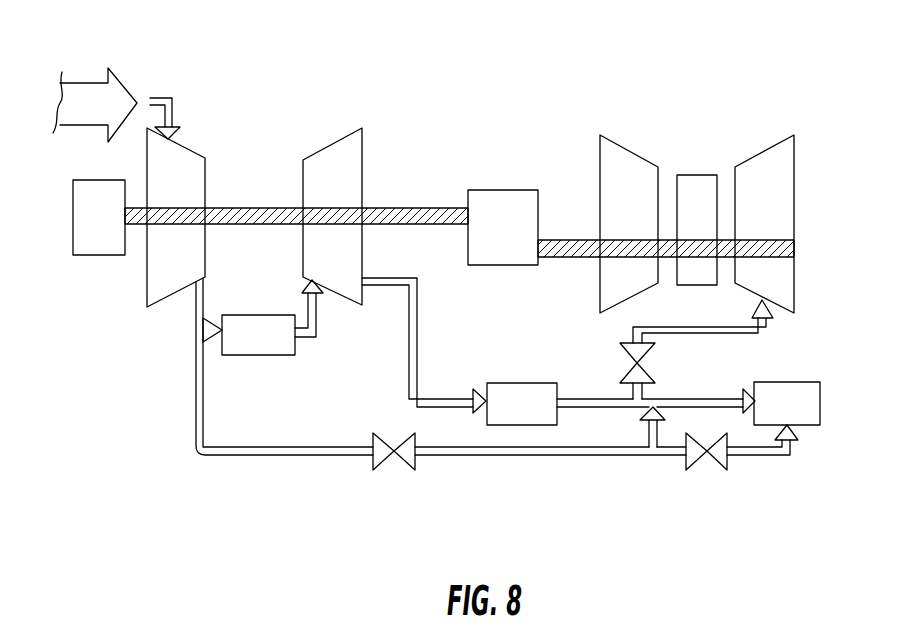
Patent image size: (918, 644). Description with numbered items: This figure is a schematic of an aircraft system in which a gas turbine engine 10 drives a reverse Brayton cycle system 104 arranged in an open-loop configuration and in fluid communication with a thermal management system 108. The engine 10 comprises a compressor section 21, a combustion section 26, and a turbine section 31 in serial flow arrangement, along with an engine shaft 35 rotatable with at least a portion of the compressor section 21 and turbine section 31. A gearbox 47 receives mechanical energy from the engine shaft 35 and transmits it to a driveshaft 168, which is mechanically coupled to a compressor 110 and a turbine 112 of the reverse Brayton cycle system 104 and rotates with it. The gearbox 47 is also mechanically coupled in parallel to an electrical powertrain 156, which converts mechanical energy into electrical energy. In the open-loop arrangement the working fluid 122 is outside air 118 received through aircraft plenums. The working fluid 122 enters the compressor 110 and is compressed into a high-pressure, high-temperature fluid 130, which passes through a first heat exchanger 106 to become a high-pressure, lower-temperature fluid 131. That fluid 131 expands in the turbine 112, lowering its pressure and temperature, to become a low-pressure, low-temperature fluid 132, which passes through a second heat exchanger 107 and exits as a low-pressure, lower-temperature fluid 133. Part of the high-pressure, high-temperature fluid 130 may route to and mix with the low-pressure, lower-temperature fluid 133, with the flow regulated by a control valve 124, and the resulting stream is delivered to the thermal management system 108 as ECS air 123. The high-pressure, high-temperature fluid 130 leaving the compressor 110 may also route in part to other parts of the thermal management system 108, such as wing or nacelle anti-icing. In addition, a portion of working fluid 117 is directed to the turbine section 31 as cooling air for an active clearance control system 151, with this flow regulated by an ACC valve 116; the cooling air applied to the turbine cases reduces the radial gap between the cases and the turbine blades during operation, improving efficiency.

The gas turbine engine 10 is at (687, 137).
The compressor section 21 is at (617, 218).
The combustion section 26 is at (685, 231).
The turbine section 31 is at (752, 218).
The engine shaft 35 is at (570, 240).
The gearbox 47 is at (491, 241).
The reverse Brayton cycle system 104 is at (278, 135).
The first heat exchanger 106 is at (241, 350).
The second heat exchanger 107 is at (505, 418).
The thermal management system 108 is at (770, 417).
The compressor 110 is at (159, 258).
The turbine 112 is at (315, 258).
The ACC valve 116 is at (618, 345).
The portion of working fluid 117 is at (642, 391).
The outside air 118 is at (88, 83).
The working fluid 122 is at (75, 120).
The ECS air 123 is at (695, 398).
The control valve 124 is at (373, 433).
The high-pressure, high-temperature fluid 130 is at (196, 312).
The high-pressure, lower-temperature fluid 131 is at (316, 322).
The low-pressure, low-temperature fluid 132 is at (380, 278).
The low-pressure, lower-temperature fluid 133 is at (578, 398).
The active clearance control system 151 is at (766, 294).
The electrical powertrain 156 is at (82, 231).
The driveshaft 168 is at (138, 225).